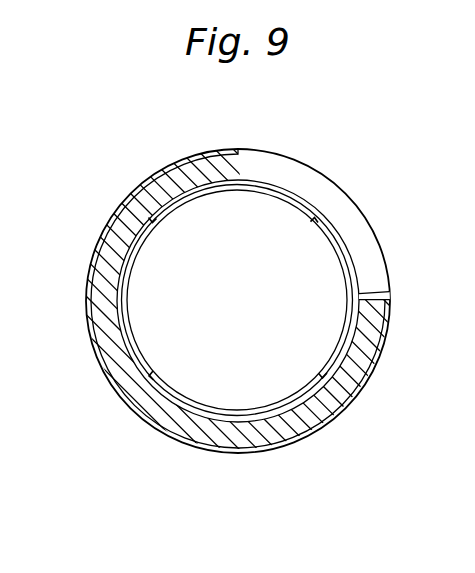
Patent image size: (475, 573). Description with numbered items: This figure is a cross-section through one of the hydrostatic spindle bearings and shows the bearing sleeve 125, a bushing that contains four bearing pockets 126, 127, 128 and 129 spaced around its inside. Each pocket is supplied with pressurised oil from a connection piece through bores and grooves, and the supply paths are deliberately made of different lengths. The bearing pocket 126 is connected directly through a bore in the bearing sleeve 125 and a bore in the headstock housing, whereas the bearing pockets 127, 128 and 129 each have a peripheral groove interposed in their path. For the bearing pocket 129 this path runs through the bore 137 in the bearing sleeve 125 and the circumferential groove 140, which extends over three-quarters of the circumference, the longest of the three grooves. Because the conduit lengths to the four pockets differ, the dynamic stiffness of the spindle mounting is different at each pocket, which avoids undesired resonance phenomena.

The bearing sleeve 125 is at (205, 431).
The bearing pocket 126 is at (288, 196).
The bearing pocket 127 is at (147, 378).
The bearing pocket 128 is at (277, 407).
The bearing pocket 129 is at (353, 263).
The bore 137 is at (383, 297).
The circumferential groove 140 is at (150, 418).